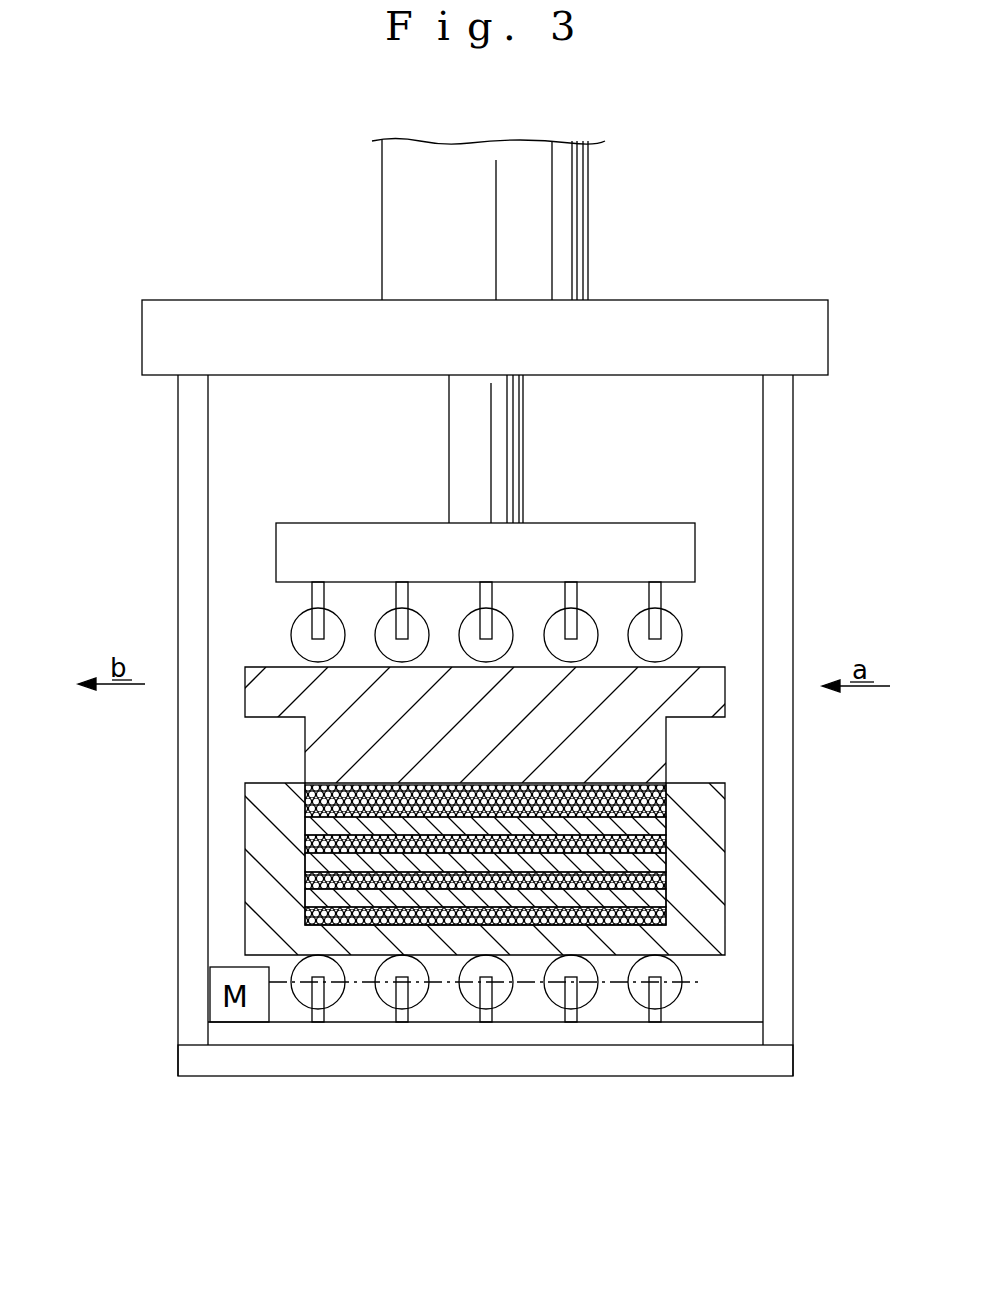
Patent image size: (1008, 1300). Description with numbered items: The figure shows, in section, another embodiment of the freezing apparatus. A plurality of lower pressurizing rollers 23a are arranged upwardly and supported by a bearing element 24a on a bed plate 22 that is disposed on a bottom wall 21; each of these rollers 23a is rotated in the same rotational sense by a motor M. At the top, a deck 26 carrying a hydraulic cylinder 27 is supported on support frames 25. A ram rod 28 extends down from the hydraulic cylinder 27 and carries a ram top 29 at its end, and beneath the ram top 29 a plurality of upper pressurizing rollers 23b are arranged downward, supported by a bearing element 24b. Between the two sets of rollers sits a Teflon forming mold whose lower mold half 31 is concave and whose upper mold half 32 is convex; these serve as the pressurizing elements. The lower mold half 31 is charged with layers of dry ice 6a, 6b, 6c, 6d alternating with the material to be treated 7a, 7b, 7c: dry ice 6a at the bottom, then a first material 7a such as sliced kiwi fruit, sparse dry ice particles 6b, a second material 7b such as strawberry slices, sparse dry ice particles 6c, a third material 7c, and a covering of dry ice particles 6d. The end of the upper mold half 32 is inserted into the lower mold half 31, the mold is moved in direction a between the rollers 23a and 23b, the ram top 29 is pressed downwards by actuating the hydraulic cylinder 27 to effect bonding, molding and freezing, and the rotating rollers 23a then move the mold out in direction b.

The bottom wall 21 is at (443, 1067).
The bed plate 22 is at (528, 1038).
The pressurizing rollers 23a is at (673, 983).
The bearing element 24a is at (657, 992).
The pressurizing rollers 23b is at (680, 632).
The bearing element 24b is at (316, 600).
The support frames 25 is at (782, 492).
The deck 26 is at (717, 299).
The hydraulic cylinder 27 is at (563, 198).
The ram rod 28 is at (513, 441).
The ram top 29 is at (643, 523).
The lower mold half 31 is at (714, 937).
The upper mold half 32 is at (720, 702).
The dry ice 6a is at (305, 914).
The dry ice particles 6b is at (305, 879).
The dry ice particles 6c is at (305, 845).
The dry ice particles 6d is at (305, 808).
The material to be treated 7a is at (658, 898).
The material to be treated 7b is at (658, 860).
The material to be treated 7c is at (658, 823).